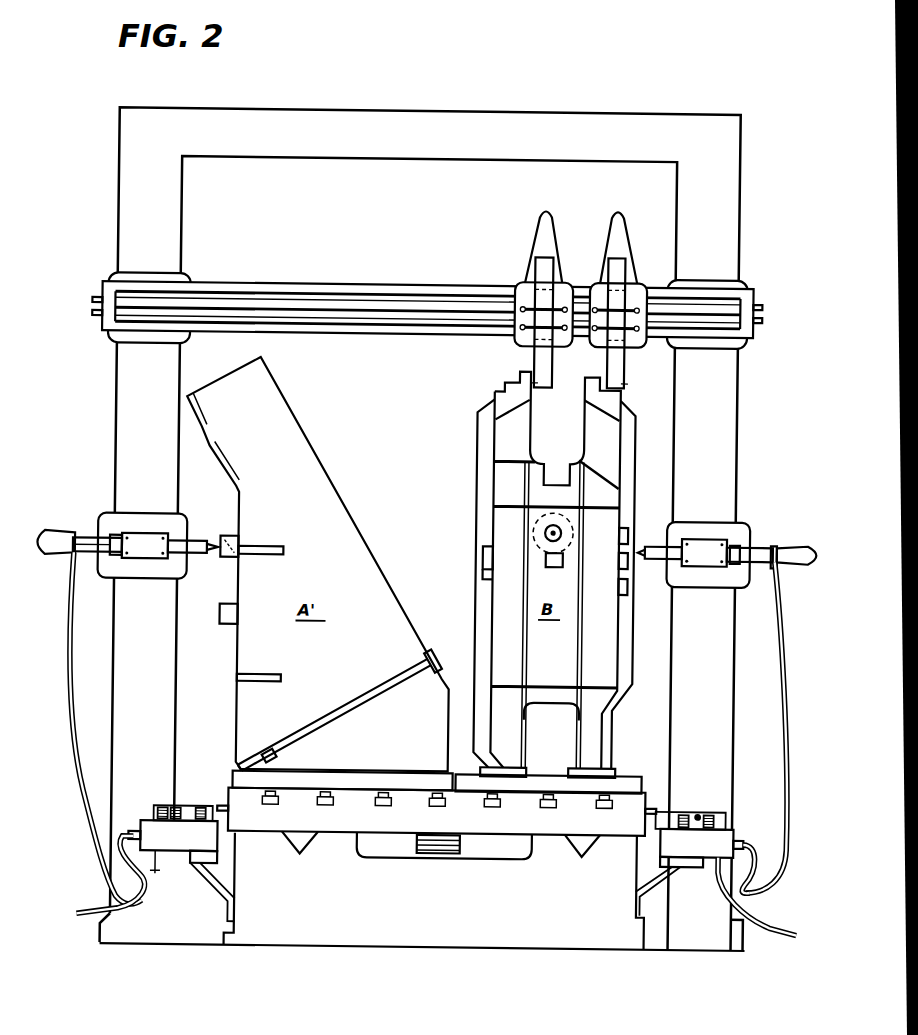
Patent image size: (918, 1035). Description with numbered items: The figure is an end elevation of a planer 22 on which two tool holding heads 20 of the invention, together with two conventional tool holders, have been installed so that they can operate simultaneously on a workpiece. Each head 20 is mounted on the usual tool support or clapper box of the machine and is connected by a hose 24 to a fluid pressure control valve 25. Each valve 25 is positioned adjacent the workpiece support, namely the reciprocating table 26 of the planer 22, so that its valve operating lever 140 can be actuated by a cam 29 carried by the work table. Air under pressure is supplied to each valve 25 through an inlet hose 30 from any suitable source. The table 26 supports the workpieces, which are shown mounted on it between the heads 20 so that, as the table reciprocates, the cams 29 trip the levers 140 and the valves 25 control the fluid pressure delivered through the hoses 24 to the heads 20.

The head 20 is at (120, 531).
The planer 22 is at (325, 903).
The hose 24 is at (72, 680).
The fluid pressure control valve 25 is at (140, 823).
The reciprocating table 26 is at (500, 825).
The cam 29 is at (222, 814).
The inlet hose 30 is at (93, 906).
The valve operating lever 140 is at (173, 805).